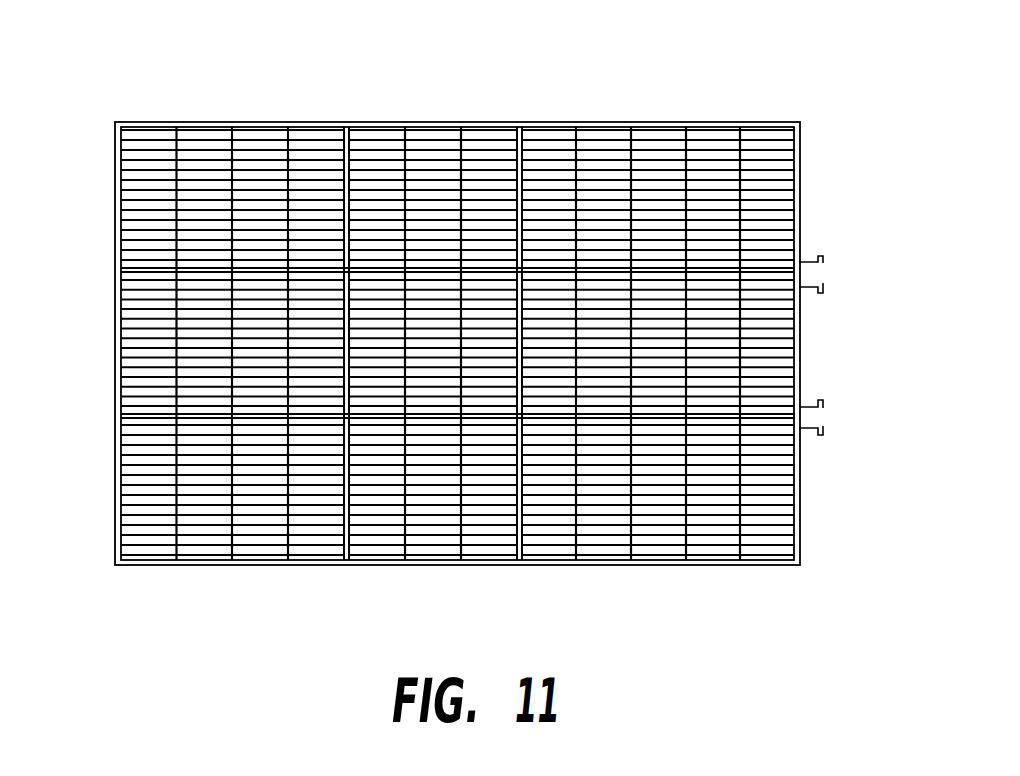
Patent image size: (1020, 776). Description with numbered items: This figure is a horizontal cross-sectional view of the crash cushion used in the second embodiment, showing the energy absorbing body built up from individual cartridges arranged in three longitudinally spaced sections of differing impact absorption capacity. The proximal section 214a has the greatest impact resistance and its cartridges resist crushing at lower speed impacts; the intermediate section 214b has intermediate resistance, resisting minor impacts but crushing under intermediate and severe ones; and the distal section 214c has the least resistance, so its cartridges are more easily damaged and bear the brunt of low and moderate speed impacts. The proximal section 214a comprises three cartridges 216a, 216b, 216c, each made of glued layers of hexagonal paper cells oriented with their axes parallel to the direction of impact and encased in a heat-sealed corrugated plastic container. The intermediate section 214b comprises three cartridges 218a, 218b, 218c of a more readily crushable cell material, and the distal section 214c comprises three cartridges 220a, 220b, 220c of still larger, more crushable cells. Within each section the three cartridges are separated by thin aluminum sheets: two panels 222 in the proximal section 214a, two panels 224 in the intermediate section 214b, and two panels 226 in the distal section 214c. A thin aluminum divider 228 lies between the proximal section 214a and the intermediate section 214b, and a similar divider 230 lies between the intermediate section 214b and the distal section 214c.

The proximal section 214a is at (699, 106).
The intermediate section 214b is at (442, 110).
The distal section 214c is at (201, 110).
The cartridge 216a is at (723, 168).
The cartridge 216b is at (727, 341).
The cartridge 216c is at (717, 508).
The cartridge 218a is at (432, 192).
The cartridge 218b is at (438, 341).
The cartridge 218c is at (420, 483).
The cartridge 220a is at (190, 217).
The cartridge 220b is at (193, 338).
The cartridge 220c is at (190, 492).
The panel 222 is at (730, 268).
The panel 224 is at (491, 272).
The panel 226 is at (273, 268).
The divider 228 is at (500, 127).
The divider 230 is at (343, 160).